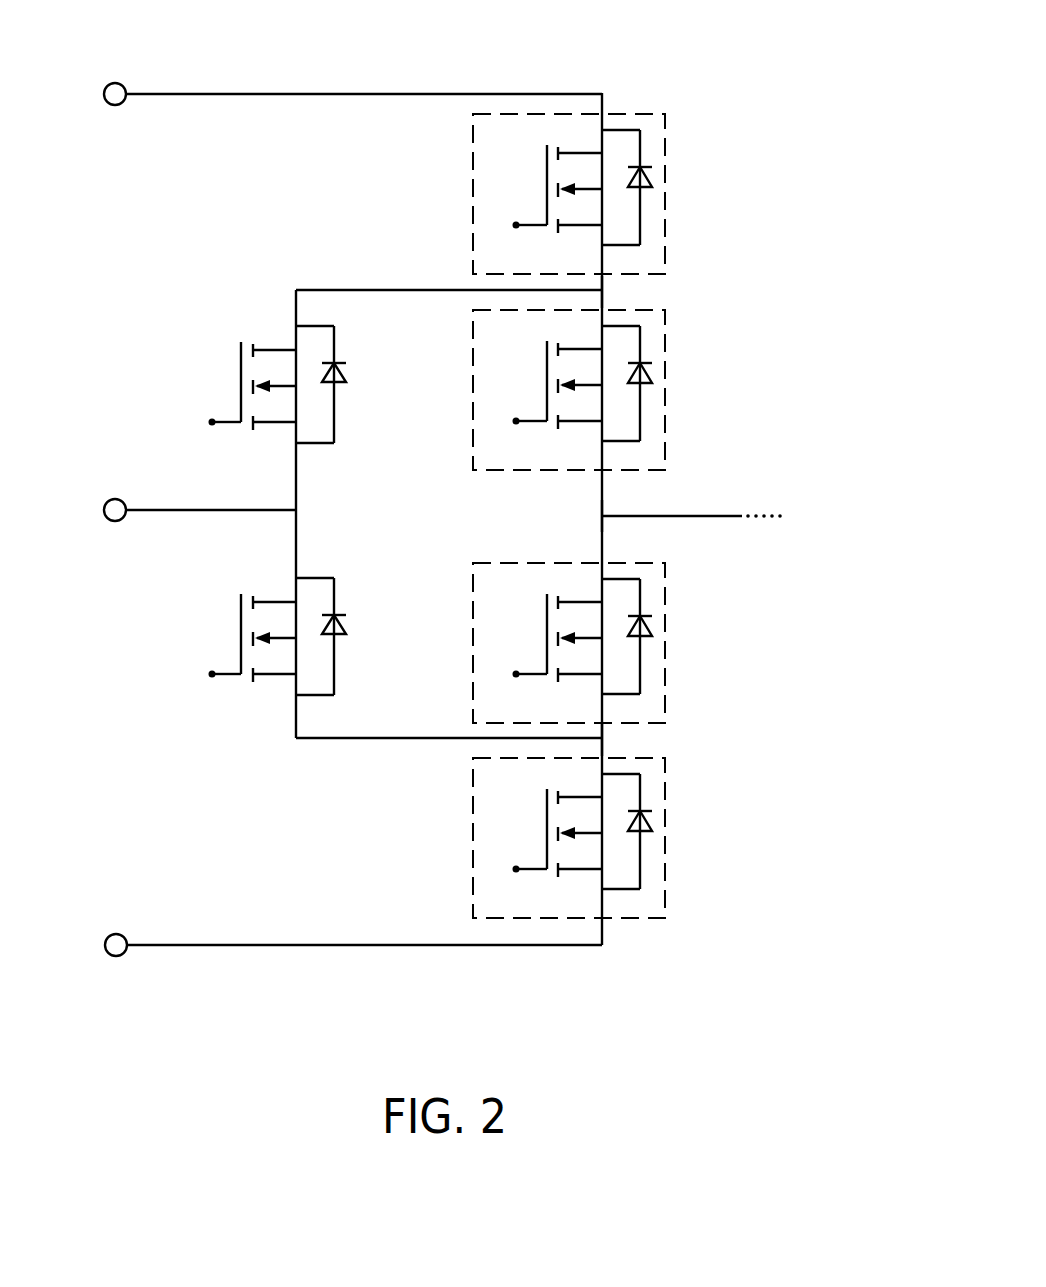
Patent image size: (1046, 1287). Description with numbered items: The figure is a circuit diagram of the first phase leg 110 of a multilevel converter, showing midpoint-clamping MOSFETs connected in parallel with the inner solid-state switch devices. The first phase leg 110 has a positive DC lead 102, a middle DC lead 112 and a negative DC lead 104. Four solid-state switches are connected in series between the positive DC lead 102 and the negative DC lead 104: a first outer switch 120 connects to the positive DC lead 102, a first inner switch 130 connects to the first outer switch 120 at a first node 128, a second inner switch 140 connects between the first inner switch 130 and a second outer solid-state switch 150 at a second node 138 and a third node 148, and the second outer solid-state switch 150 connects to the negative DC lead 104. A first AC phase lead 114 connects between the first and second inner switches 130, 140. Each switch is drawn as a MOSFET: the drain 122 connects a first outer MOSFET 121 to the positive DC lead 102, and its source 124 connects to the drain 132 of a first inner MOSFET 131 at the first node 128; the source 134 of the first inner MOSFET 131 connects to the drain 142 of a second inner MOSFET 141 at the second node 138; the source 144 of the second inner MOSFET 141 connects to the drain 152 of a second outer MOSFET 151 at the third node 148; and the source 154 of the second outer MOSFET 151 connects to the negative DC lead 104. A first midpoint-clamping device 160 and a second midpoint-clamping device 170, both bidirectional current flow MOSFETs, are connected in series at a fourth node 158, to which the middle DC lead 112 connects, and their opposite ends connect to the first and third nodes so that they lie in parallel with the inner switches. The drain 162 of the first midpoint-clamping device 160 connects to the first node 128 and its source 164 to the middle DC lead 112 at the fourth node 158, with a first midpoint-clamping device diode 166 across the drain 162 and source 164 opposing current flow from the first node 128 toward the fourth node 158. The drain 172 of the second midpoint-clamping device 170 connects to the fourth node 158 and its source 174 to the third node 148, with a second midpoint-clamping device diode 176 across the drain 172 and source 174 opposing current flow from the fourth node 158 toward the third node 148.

The positive DC lead 102 is at (340, 93).
The negative DC lead 104 is at (260, 946).
The first phase leg 110 is at (163, 1015).
The middle DC lead 112 is at (167, 508).
The first AC phase lead 114 is at (723, 516).
The first outer switch 120 is at (630, 112).
The first outer MOSFET 121 is at (500, 185).
The drain 122 is at (600, 146).
The source 124 is at (600, 234).
The first node 128 is at (645, 290).
The first inner switch 130 is at (665, 330).
The first inner MOSFET 131 is at (500, 381).
The drain 132 is at (600, 342).
The source 134 is at (600, 430).
The second node 138 is at (645, 490).
The second inner switch 140 is at (665, 582).
The second inner MOSFET 141 is at (500, 634).
The drain 142 is at (600, 595).
The source 144 is at (600, 683).
The third node 148 is at (645, 738).
The second outer solid-state switch 150 is at (665, 777).
The second outer MOSFET 151 is at (500, 829).
The drain 152 is at (600, 790).
The source 154 is at (600, 878).
The fourth node 158 is at (307, 508).
The first midpoint-clamping device 160 is at (160, 355).
The drain 162 is at (295, 341).
The source 164 is at (295, 432).
The first midpoint-clamping device diode 166 is at (338, 370).
The second midpoint-clamping device 170 is at (160, 637).
The drain 172 is at (295, 593).
The source 174 is at (295, 684).
The second midpoint-clamping device diode 176 is at (338, 622).